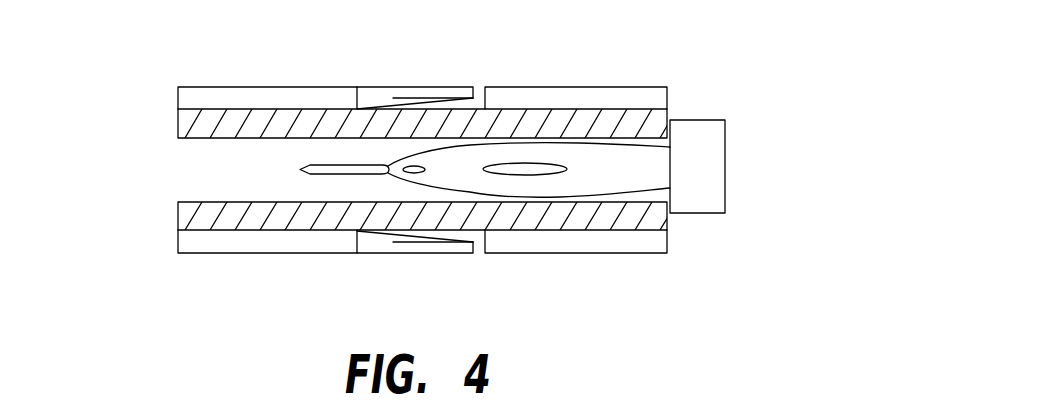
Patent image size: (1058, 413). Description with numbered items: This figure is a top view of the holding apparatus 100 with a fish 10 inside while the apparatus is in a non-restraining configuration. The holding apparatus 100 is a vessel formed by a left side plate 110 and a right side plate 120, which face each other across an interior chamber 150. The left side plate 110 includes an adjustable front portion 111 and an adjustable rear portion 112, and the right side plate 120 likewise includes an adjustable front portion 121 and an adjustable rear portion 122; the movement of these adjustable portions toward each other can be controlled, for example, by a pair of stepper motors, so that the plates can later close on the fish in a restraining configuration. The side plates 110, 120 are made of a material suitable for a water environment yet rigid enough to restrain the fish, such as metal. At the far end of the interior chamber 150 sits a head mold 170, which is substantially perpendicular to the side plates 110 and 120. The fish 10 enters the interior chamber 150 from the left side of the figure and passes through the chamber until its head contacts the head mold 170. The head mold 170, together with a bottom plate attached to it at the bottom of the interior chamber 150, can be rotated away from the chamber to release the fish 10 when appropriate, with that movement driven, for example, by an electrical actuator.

The holding apparatus 100 is at (684, 37).
The fish 10 is at (603, 168).
The left side plate 110 is at (465, 63).
The adjustable front portion 111 is at (576, 68).
The adjustable rear portion 112 is at (472, 77).
The right side plate 120 is at (446, 277).
The adjustable front portion 121 is at (577, 274).
The adjustable rear portion 122 is at (472, 265).
The interior chamber 150 is at (230, 145).
The head mold 170 is at (714, 219).